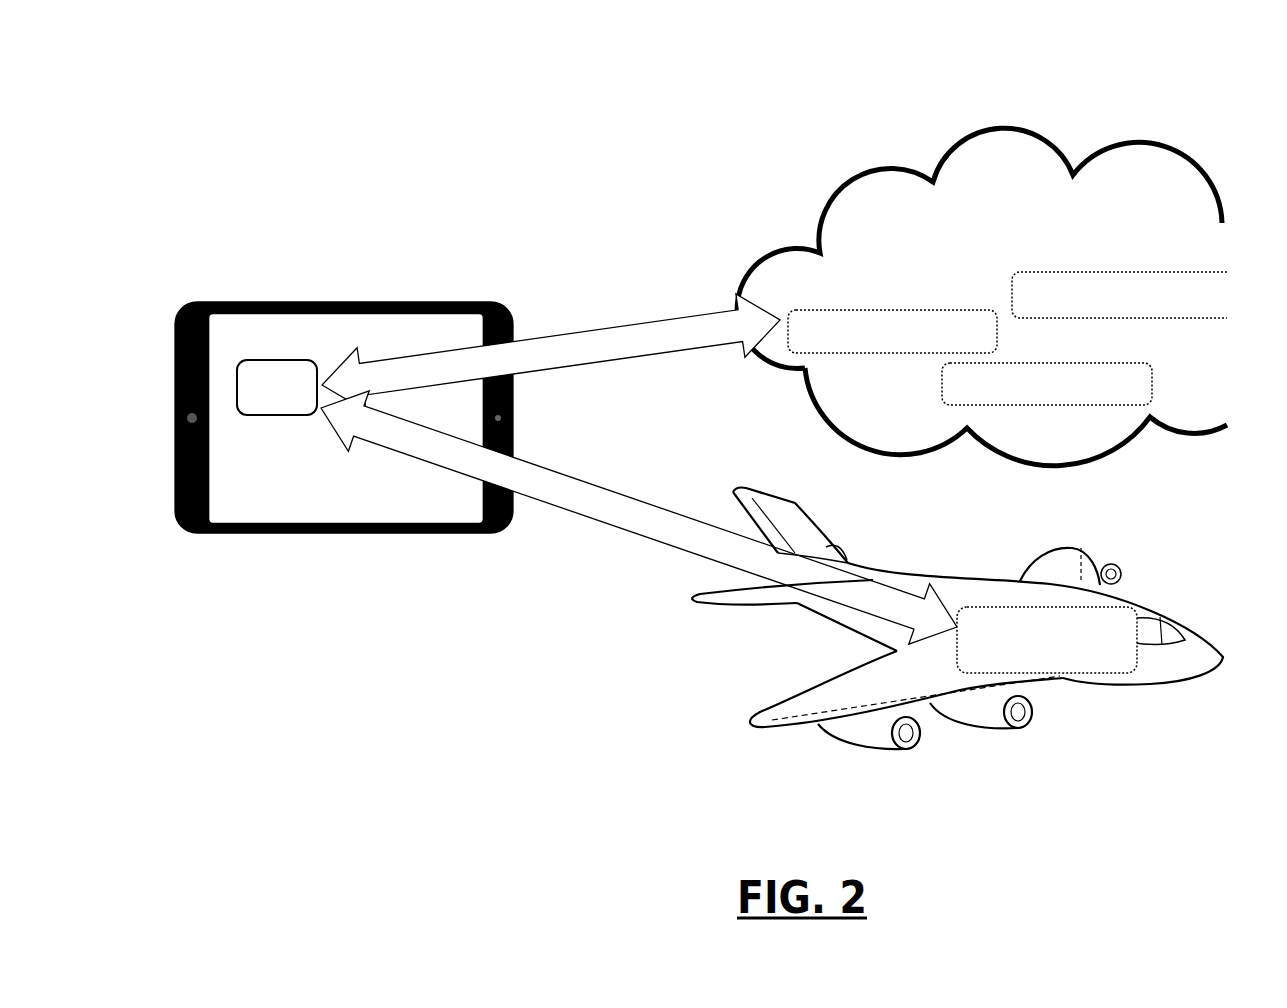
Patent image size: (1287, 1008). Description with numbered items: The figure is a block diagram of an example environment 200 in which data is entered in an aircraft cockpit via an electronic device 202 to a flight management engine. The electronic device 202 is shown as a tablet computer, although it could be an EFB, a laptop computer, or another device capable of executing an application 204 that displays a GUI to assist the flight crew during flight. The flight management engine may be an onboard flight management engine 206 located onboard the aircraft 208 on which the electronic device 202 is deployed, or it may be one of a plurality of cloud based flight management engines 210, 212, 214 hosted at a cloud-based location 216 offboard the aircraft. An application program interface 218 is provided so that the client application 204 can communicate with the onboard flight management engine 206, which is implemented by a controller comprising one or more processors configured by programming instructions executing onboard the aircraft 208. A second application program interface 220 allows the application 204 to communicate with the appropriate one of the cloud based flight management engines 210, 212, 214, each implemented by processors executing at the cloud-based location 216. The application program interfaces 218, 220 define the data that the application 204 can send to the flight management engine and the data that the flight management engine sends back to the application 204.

The example environment 200 is at (956, 43).
The electronic device 202 is at (344, 379).
The application 204 is at (263, 320).
The onboard flight management engine 206 is at (957, 619).
The aircraft 208 is at (1019, 594).
The cloud based flight management engine 210 is at (892, 305).
The cloud based flight management engine 212 is at (1119, 266).
The cloud based flight management engine 214 is at (1060, 366).
The cloud-based location 216 is at (985, 274).
The application program interface 218 is at (639, 515).
The application program interface 220 is at (551, 318).